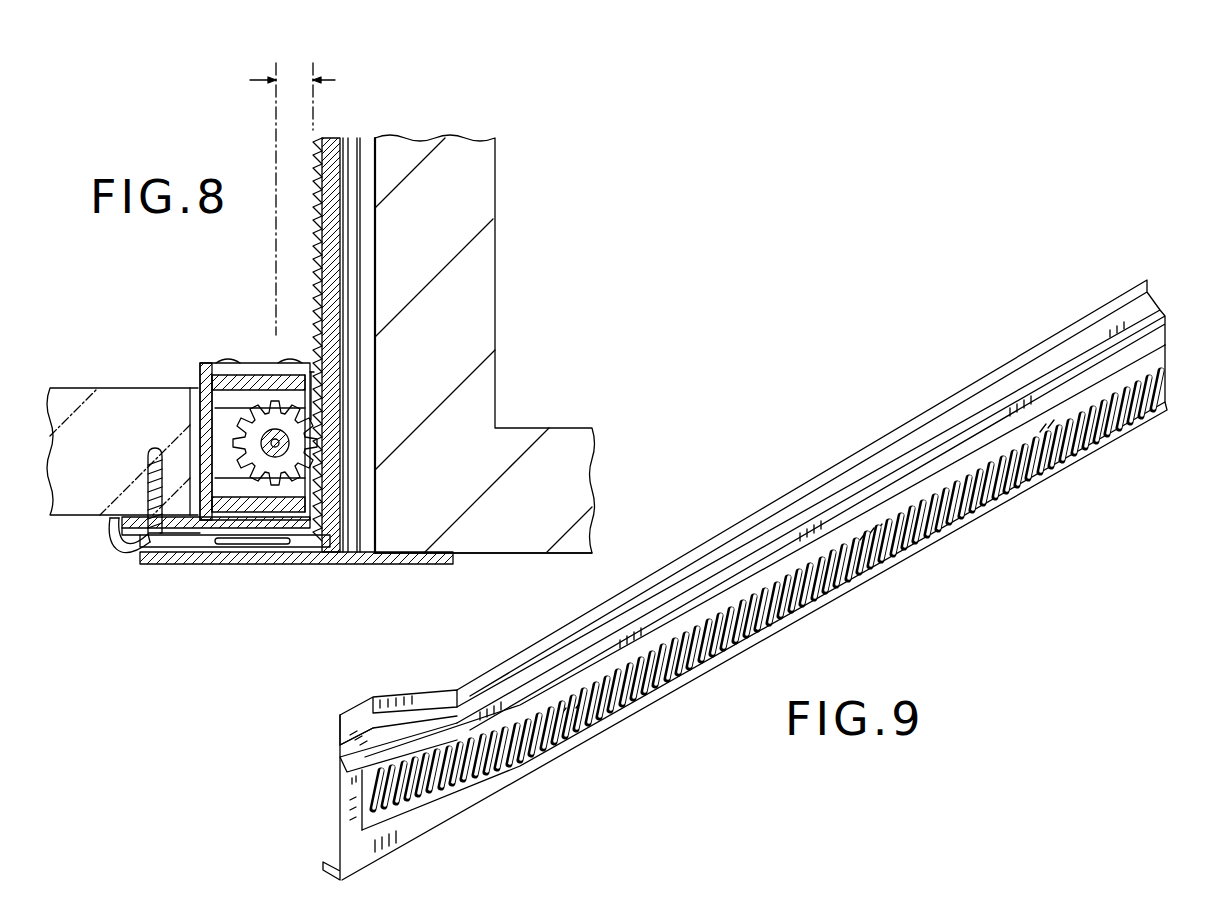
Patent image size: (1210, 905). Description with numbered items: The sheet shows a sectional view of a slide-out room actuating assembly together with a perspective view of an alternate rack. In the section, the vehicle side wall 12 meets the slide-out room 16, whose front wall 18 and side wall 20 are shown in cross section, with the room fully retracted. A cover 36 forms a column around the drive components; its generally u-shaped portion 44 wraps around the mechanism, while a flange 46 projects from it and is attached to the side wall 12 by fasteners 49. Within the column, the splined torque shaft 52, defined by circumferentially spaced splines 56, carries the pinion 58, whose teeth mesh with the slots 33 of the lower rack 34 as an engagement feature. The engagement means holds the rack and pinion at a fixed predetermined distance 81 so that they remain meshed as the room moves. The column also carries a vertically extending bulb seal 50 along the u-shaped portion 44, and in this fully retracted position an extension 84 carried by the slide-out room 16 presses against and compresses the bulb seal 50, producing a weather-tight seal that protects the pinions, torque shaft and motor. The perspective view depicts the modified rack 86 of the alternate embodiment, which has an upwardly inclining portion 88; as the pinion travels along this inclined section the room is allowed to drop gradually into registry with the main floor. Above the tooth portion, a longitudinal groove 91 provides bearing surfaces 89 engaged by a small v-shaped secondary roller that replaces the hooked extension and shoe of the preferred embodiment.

In FIG. 8, the side wall 12 is at (70, 512).
In FIG. 8, the slide-out room 16 is at (546, 366).
In FIG. 8, the front wall 18 is at (526, 540).
In FIG. 8, the side wall 20 is at (487, 175).
In FIG. 8, the slots 33 is at (318, 222).
In FIG. 8, the lower rack 34 is at (328, 252).
In FIG. 8, the cover 36 is at (197, 364).
In FIG. 8, the u-shaped portion 44 is at (200, 425).
In FIG. 8, the flange 46 is at (114, 548).
In FIG. 8, the fasteners 49 is at (155, 537).
In FIG. 8, the bulb seal 50 is at (238, 547).
In FIG. 8, the torque shaft 52 is at (318, 448).
In FIG. 8, the splines 56 is at (268, 430).
In FIG. 8, the pinion 58 is at (280, 472).
In FIG. 8, the fixed predetermined distance 81 is at (322, 80).
In FIG. 8, the extension 84 is at (193, 557).
In FIG. 9, the modified rack 86 is at (884, 428).
In FIG. 9, the upwardly inclining portion 88 is at (428, 806).
In FIG. 9, the bearing surfaces 89 is at (350, 775).
In FIG. 9, the groove 91 is at (458, 735).